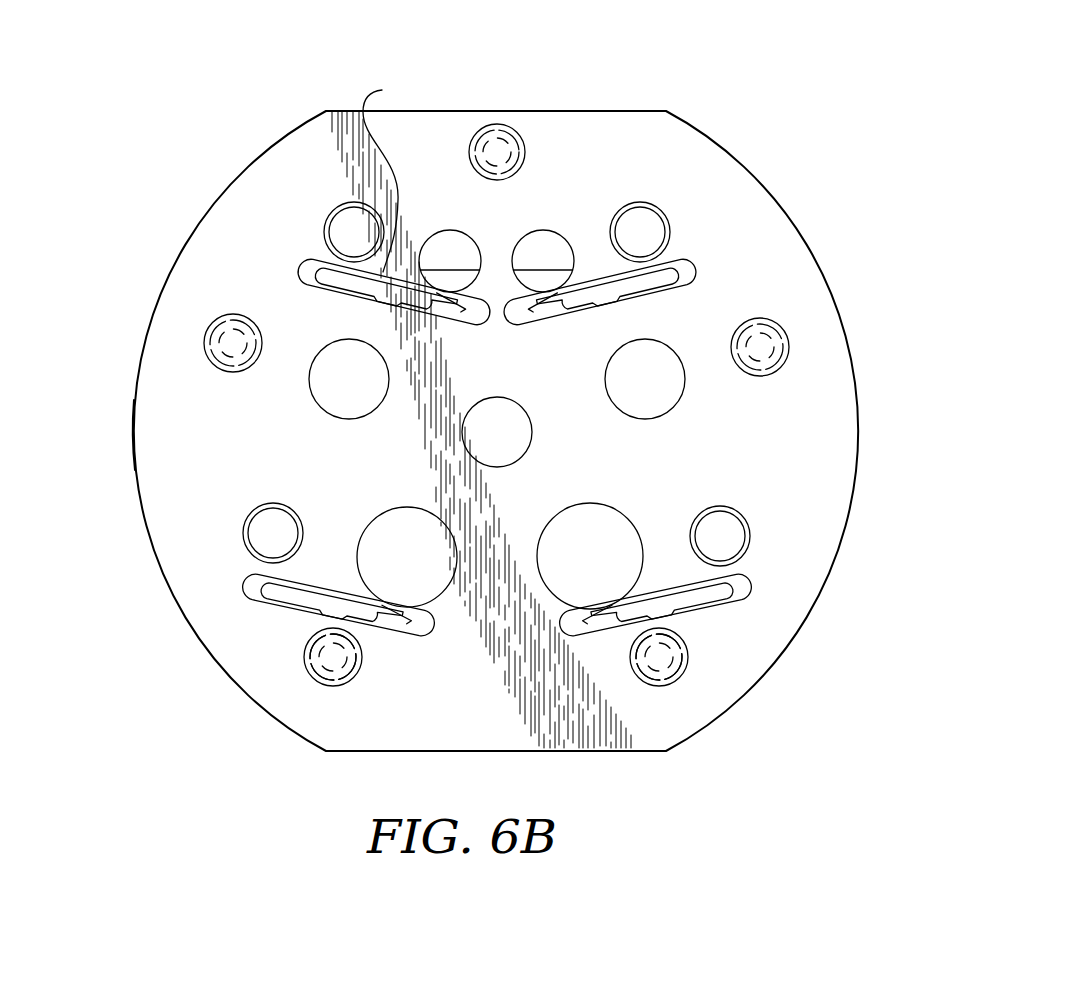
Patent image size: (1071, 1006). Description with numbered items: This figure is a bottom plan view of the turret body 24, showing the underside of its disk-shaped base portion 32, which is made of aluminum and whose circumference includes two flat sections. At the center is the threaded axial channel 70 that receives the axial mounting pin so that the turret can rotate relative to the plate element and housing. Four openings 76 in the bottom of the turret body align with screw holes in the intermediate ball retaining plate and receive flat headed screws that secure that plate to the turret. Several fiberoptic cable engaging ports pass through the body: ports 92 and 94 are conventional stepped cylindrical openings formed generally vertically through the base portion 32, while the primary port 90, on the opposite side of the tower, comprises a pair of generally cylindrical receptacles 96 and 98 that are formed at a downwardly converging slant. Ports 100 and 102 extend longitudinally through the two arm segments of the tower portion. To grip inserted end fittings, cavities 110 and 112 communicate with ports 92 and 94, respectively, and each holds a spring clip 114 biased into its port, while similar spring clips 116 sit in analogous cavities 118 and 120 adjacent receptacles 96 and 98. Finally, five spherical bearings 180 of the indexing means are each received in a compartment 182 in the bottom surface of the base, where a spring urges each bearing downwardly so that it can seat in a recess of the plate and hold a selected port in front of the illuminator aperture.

The turret body 24 is at (208, 211).
The base portion 32 is at (135, 439).
The threaded axial channel 70 is at (506, 398).
The openings 76 is at (327, 222).
The primary port 90 is at (573, 188).
The port 92 is at (393, 510).
The port 94 is at (607, 507).
The receptacle 96 is at (452, 233).
The receptacle 98 is at (530, 233).
The port 100 is at (312, 400).
The port 102 is at (680, 403).
The cavity 110 is at (432, 626).
The cavity 112 is at (578, 640).
The spring clip 114 is at (253, 599).
The spring clip 116 is at (680, 308).
The cavity 118 is at (297, 273).
The cavity 120 is at (695, 273).
The spherical bearing 180 is at (503, 126).
The compartment 182 is at (363, 657).